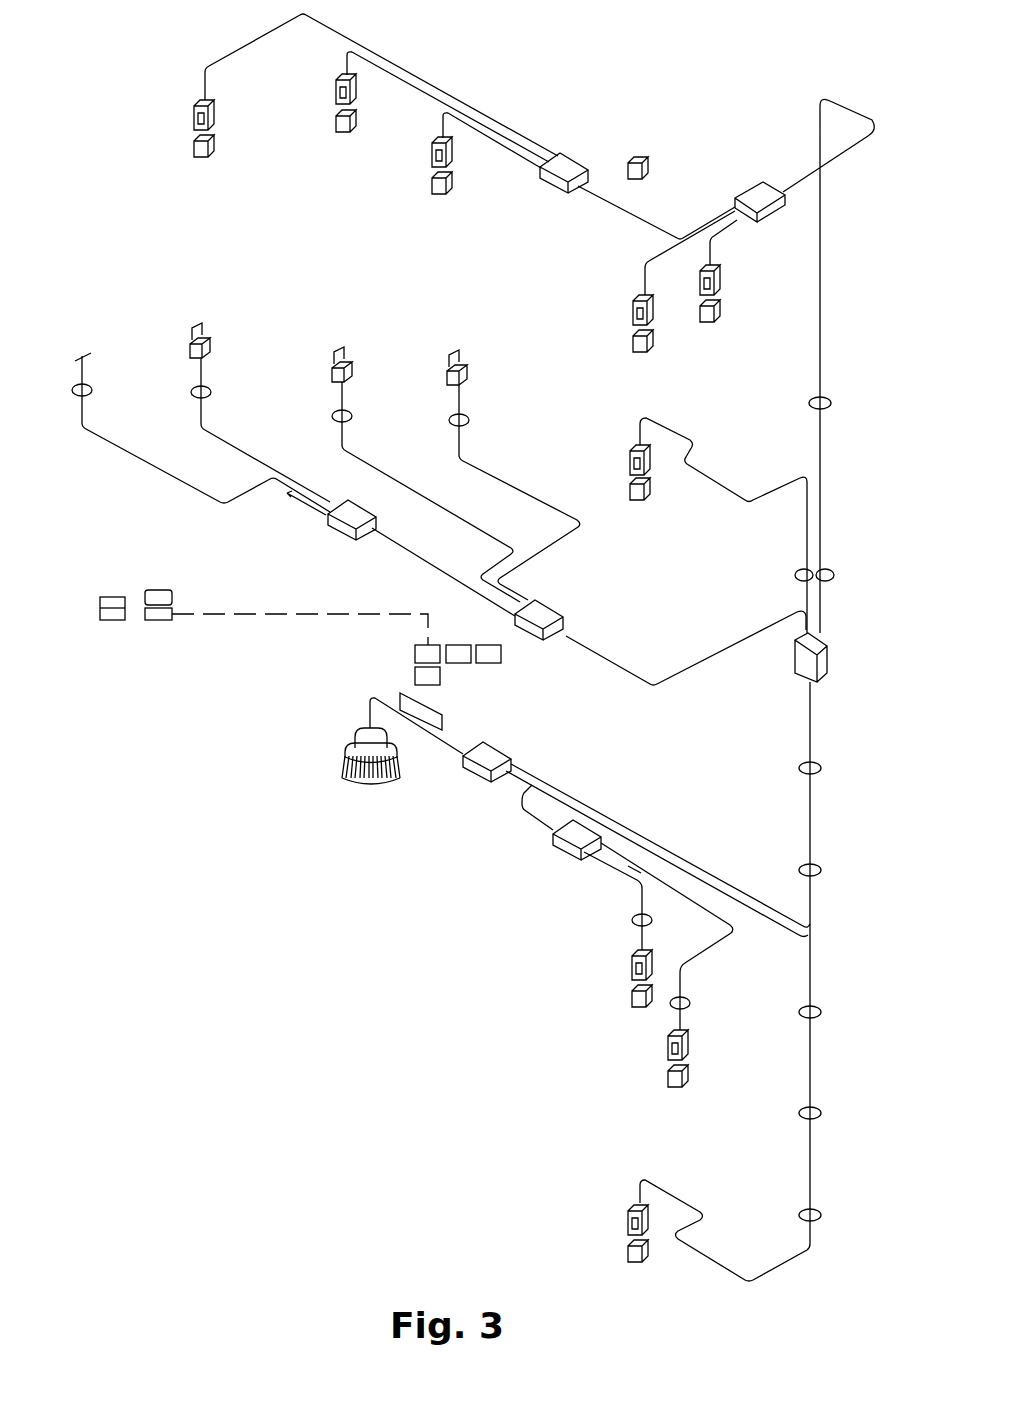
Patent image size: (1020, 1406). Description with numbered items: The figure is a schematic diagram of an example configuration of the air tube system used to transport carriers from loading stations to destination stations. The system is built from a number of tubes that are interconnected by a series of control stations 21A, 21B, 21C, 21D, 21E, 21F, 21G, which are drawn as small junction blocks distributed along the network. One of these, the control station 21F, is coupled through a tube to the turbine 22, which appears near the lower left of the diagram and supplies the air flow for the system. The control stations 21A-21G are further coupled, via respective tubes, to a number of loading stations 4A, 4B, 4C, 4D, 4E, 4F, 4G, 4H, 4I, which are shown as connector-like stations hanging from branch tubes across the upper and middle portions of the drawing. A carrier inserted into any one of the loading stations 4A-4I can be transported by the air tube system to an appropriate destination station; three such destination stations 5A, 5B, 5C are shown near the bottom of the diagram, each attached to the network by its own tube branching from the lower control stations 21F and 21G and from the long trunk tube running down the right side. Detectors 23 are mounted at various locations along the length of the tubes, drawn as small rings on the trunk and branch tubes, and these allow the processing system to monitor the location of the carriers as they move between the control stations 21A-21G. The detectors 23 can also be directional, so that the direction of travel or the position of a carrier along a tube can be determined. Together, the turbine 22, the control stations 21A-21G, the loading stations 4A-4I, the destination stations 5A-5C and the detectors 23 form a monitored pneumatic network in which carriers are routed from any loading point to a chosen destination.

The loading station 4A is at (193, 124).
The loading station 4B is at (340, 135).
The loading station 4C is at (445, 192).
The loading station 4D is at (633, 311).
The loading station 4E is at (722, 316).
The loading station 4F is at (192, 345).
The loading station 4G is at (333, 365).
The loading station 4H is at (450, 360).
The loading station 4I is at (630, 450).
The destination station 5A is at (632, 966).
The destination station 5B is at (668, 1050).
The destination station 5C is at (628, 1222).
The control station 21A is at (585, 157).
The control station 21B is at (778, 185).
The control station 21C is at (330, 506).
The control station 21D is at (568, 613).
The control station 21E is at (812, 660).
The control station 21F is at (475, 770).
The control station 21G is at (575, 835).
The turbine 22 is at (347, 761).
The detector 23 is at (815, 772).